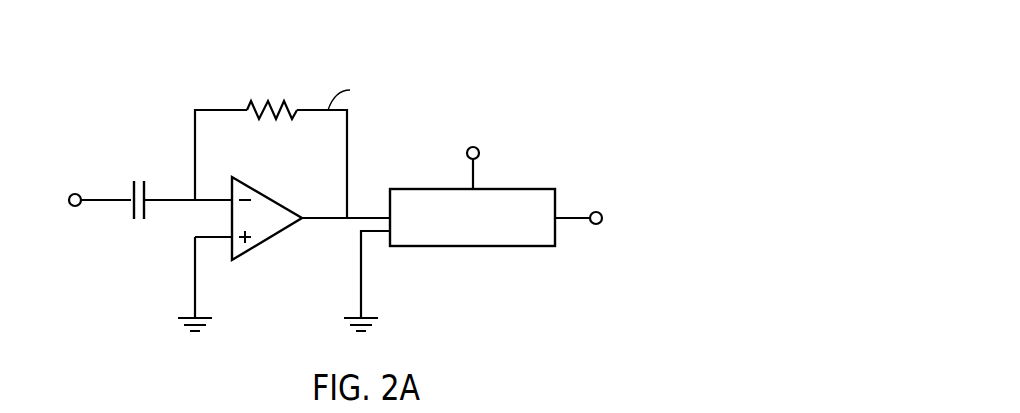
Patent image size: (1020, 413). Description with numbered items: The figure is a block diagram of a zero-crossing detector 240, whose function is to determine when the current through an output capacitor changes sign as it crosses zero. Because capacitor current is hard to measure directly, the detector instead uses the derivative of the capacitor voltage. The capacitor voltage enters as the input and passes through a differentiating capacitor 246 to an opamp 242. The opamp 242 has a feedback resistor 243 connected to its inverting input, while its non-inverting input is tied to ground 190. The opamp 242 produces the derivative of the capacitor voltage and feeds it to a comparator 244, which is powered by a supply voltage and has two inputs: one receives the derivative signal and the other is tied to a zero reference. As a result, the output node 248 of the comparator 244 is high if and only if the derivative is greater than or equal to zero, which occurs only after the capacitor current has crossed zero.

The zero-crossing detector 240 is at (568, 88).
The opamp 242 is at (268, 195).
The feedback resistor 243 is at (262, 103).
The comparator 244 is at (512, 189).
The differentiating capacitor 246 is at (138, 178).
The output node 248 is at (650, 206).
The ground 190 is at (206, 318).